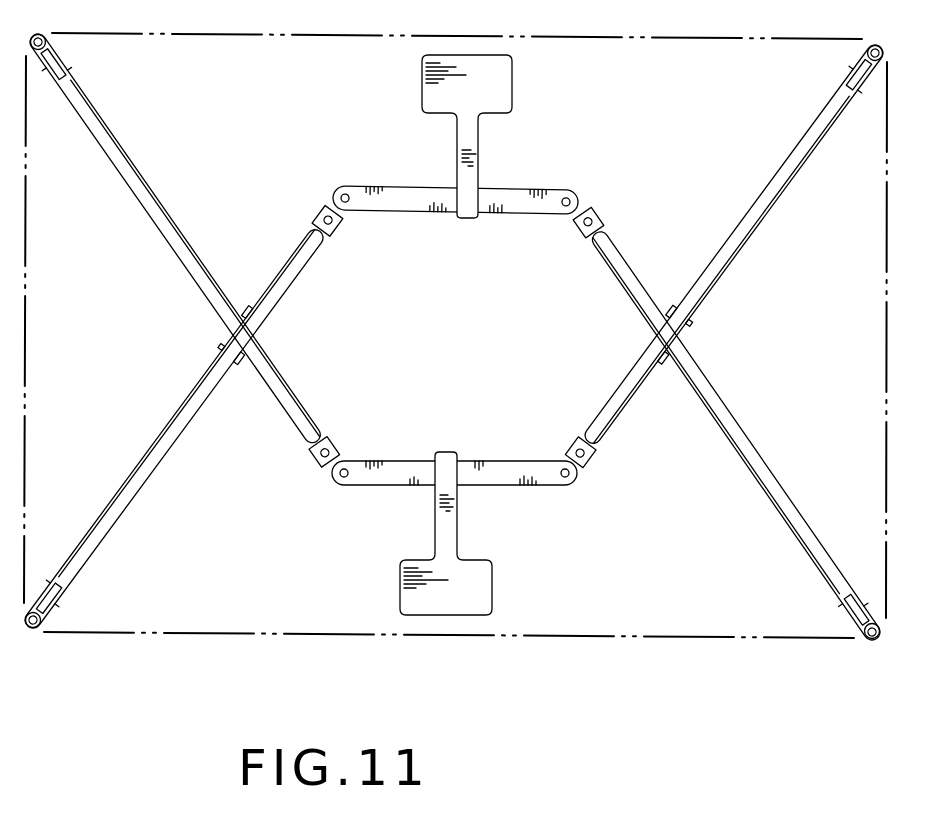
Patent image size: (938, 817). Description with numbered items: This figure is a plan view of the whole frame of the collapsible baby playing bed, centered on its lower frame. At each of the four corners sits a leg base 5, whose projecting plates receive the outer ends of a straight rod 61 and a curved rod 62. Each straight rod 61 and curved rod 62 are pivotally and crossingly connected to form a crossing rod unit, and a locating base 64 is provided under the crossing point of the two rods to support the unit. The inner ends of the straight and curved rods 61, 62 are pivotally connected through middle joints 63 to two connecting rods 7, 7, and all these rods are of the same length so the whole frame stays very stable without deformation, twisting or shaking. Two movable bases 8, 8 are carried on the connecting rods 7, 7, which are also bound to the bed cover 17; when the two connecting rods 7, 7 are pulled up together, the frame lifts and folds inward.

The leg base 5 is at (877, 617).
The connecting rod 7 is at (522, 205).
The movable base 8 is at (472, 140).
The bed cover 17 is at (657, 639).
The straight rod 61 is at (745, 448).
The curved rod 62 is at (617, 403).
The middle joint 63 is at (594, 204).
The locating base 64 is at (697, 318).